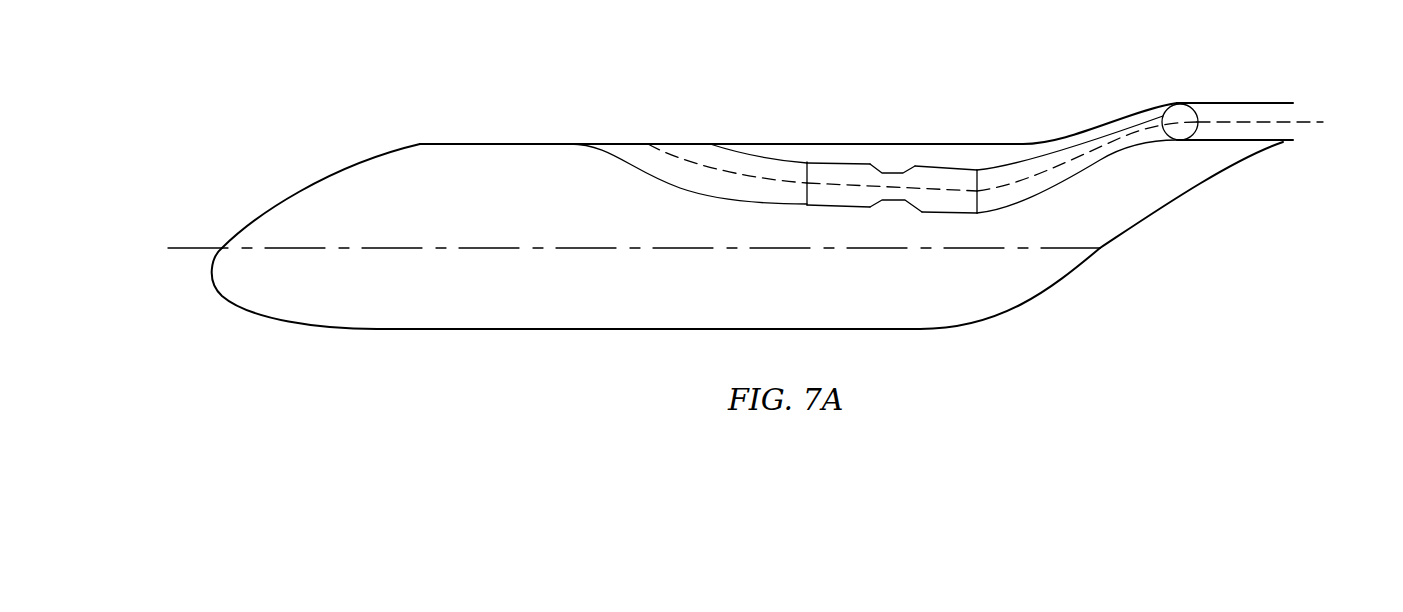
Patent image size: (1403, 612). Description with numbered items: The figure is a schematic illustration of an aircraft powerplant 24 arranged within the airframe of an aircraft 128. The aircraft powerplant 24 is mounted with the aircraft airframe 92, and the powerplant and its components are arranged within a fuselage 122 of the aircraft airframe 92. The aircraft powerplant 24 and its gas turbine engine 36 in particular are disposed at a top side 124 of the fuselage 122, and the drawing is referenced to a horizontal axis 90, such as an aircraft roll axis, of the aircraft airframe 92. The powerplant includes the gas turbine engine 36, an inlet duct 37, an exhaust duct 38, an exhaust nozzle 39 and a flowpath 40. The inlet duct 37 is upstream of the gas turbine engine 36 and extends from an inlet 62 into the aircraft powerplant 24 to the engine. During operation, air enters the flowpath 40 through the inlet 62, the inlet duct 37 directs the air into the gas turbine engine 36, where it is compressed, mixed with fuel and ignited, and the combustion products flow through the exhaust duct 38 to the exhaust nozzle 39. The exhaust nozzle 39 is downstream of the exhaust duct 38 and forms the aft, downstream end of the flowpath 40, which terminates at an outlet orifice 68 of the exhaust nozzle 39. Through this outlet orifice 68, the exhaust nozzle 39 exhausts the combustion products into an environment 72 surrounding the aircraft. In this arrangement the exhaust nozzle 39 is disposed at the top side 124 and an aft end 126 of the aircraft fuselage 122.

The aircraft 128 is at (266, 129).
The horizontal axis 90 is at (177, 249).
The aircraft airframe 92 is at (418, 139).
The fuselage 122 is at (480, 143).
The top side 124 is at (527, 143).
The inlet 62 is at (630, 143).
The inlet duct 37 is at (757, 150).
The aircraft powerplant 24 is at (847, 153).
The gas turbine engine 36 is at (903, 168).
The exhaust duct 38 is at (1023, 153).
The flowpath 40 is at (1010, 197).
The exhaust nozzle 39 is at (1193, 98).
The outlet orifice 68 is at (1293, 128).
The environment 72 is at (1378, 193).
The aft end 126 is at (1282, 145).